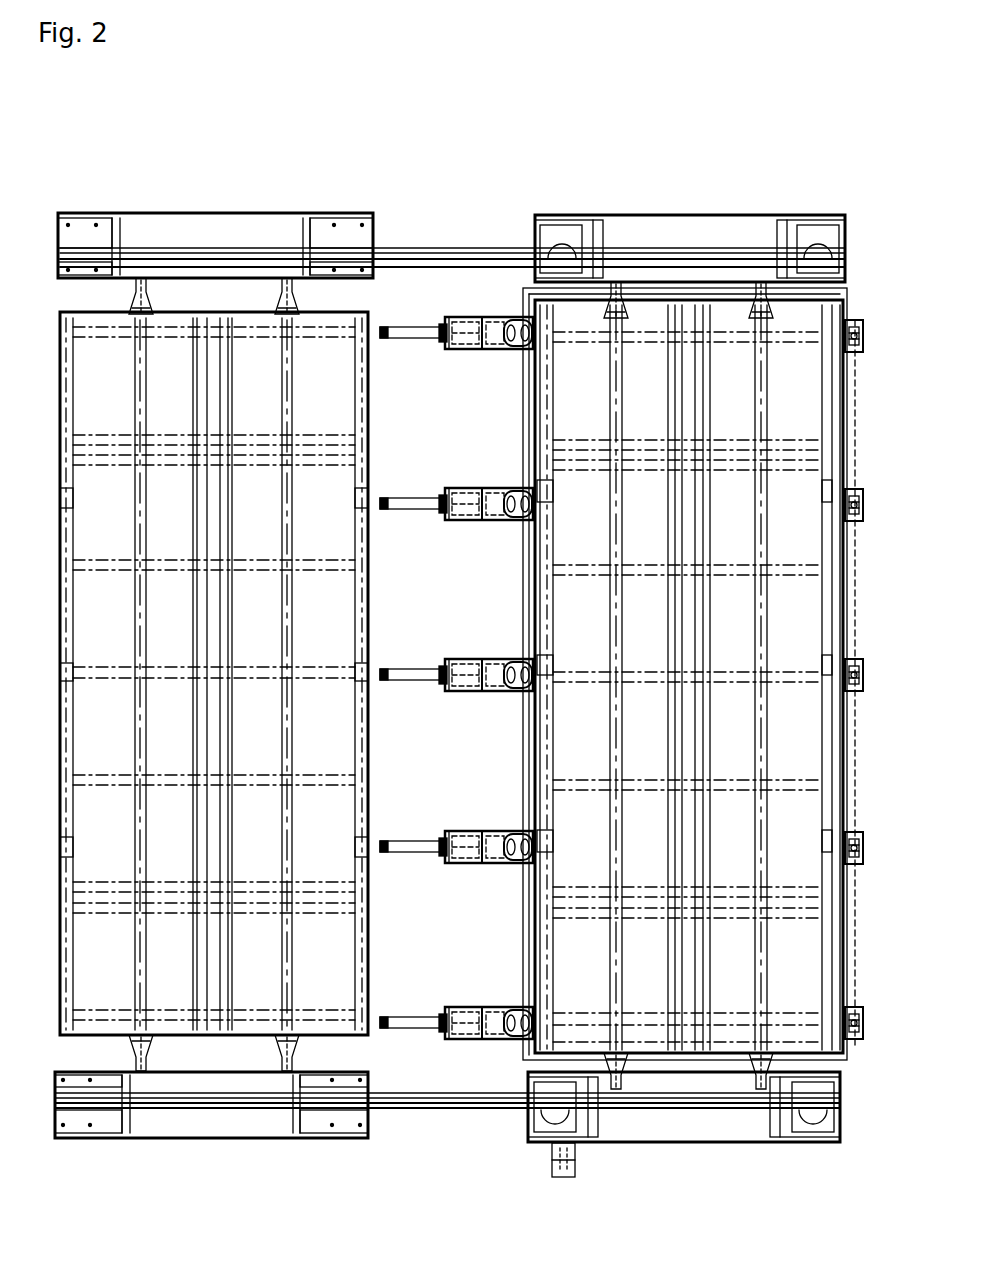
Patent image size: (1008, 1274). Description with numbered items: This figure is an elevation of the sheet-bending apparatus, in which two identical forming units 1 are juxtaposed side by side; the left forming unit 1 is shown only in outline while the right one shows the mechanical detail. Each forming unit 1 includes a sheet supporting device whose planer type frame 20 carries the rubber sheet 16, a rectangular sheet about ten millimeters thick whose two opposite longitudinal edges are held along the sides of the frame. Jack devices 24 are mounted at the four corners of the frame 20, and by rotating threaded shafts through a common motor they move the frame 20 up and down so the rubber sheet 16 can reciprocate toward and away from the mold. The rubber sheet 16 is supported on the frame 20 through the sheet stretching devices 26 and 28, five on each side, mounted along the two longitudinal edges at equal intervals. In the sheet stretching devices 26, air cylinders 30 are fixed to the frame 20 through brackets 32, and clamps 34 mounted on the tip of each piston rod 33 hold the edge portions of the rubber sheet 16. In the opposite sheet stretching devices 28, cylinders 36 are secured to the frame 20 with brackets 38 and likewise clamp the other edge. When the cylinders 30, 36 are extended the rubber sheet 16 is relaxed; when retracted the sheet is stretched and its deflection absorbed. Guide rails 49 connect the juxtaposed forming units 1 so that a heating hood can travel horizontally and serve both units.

The forming unit 1 is at (200, 162).
The rubber sheet 16 is at (808, 433).
The planer type frame 20 is at (524, 392).
The jack device 24 is at (537, 243).
The sheet stretching device 26 is at (440, 345).
The sheet stretching device 28 is at (865, 342).
The air cylinder 30 is at (430, 328).
The bracket 32 is at (472, 317).
The piston rod 33 is at (468, 350).
The clamp 34 is at (503, 352).
The cylinder 36 is at (852, 320).
The bracket 38 is at (846, 345).
The guide rail 49 is at (437, 258).